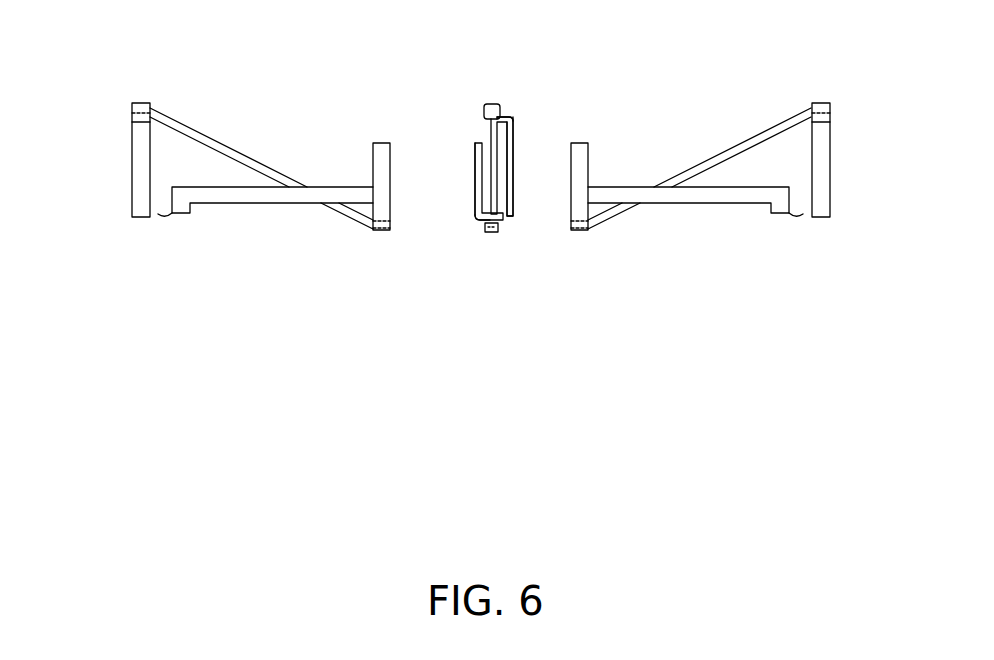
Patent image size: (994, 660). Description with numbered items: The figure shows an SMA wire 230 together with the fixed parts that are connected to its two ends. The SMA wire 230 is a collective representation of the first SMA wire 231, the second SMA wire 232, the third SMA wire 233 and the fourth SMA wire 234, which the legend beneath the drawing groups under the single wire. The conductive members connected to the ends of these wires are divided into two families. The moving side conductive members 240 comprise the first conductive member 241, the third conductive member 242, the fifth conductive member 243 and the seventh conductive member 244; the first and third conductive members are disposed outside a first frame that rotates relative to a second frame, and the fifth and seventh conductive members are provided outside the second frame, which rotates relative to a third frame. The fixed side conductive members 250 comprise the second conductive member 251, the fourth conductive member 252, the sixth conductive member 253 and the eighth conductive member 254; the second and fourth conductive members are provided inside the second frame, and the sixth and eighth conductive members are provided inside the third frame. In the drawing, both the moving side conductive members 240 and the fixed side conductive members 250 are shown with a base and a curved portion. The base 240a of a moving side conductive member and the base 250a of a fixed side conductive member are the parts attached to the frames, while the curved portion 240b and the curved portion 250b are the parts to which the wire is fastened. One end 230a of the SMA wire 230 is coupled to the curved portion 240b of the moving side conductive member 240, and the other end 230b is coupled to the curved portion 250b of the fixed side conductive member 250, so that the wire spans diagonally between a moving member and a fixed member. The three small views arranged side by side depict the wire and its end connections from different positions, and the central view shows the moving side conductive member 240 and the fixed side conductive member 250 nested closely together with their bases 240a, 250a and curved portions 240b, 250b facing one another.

The SMA wire 230 is at (213, 143).
The end of SMA wire 230a is at (147, 103).
The end of SMA wire 230b is at (380, 233).
The moving side conductive members 240 is at (137, 162).
The base 240a is at (512, 172).
The curved portion 240b is at (510, 104).
The fixed side conductive members 250 is at (243, 203).
The base 250a is at (477, 187).
The curved portion 250b is at (473, 231).
The first SMA wire 231 is at (298, 390).
The second SMA wire 232 is at (298, 422).
The third SMA wire 233 is at (298, 454).
The fourth SMA wire 234 is at (298, 485).
The first conductive member 241 is at (476, 390).
The third conductive member 242 is at (476, 422).
The fifth conductive member 243 is at (476, 454).
The seventh conductive member 244 is at (476, 485).
The second conductive member 251 is at (649, 390).
The fourth conductive member 252 is at (649, 422).
The sixth conductive member 253 is at (649, 454).
The eighth conductive member 254 is at (649, 485).